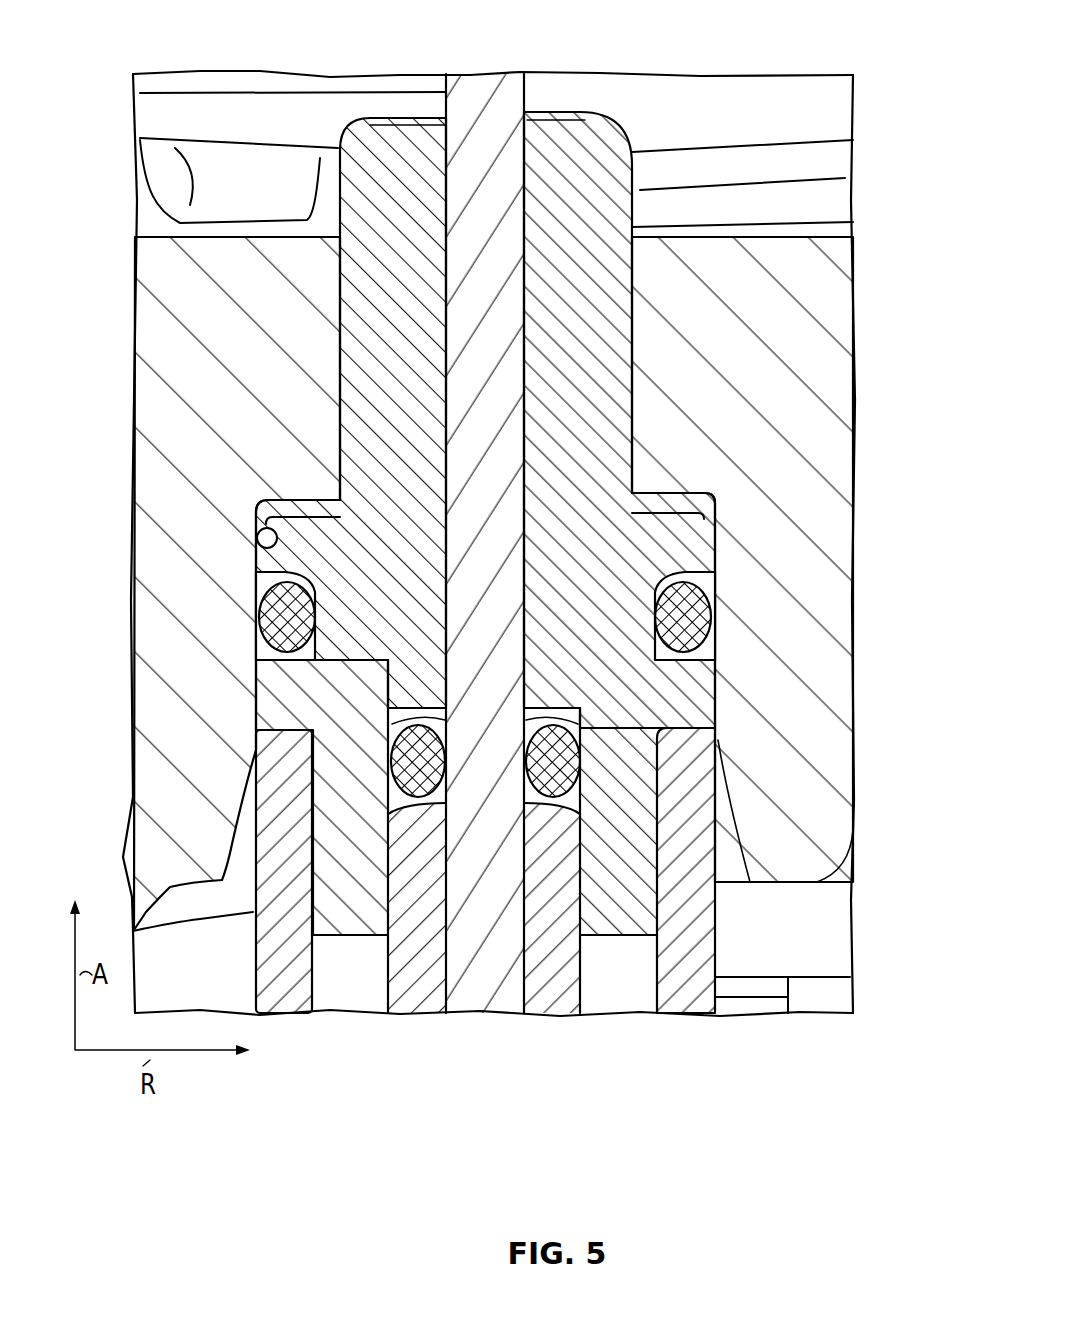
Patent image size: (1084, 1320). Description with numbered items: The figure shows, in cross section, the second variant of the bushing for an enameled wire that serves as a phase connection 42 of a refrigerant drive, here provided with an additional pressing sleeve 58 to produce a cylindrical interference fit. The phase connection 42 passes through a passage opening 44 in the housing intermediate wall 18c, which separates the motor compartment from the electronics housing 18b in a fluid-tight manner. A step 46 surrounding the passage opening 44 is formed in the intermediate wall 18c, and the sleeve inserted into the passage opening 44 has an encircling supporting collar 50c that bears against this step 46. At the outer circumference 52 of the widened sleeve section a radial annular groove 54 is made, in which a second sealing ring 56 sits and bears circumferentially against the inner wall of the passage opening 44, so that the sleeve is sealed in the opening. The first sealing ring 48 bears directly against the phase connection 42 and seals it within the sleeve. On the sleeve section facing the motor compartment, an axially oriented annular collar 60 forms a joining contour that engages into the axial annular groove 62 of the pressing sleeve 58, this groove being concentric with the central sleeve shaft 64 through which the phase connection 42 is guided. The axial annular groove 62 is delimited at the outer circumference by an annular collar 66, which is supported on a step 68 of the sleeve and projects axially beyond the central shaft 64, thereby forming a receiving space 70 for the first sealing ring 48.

The electronics housing 18b is at (372, 31).
The housing intermediate wall 18c is at (813, 277).
The phase connection 42 is at (512, 90).
The passage opening 44 is at (723, 810).
The step 46 is at (673, 493).
The first sealing ring 48 is at (570, 750).
The supporting collar 50c is at (290, 537).
The outer circumference 52 is at (265, 525).
The annular groove 54 is at (705, 582).
The second sealing ring 56 is at (687, 623).
The pressing sleeve 58 is at (688, 950).
The annular collar 60 is at (287, 835).
The axial annular groove 62 is at (353, 967).
The central sleeve shaft 64 is at (557, 970).
The annular collar 66 is at (695, 862).
The step 68 is at (697, 728).
The receiving space 70 is at (402, 717).